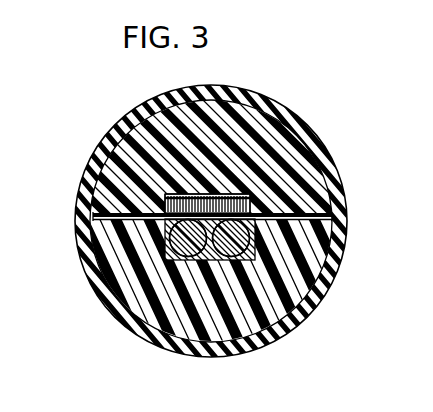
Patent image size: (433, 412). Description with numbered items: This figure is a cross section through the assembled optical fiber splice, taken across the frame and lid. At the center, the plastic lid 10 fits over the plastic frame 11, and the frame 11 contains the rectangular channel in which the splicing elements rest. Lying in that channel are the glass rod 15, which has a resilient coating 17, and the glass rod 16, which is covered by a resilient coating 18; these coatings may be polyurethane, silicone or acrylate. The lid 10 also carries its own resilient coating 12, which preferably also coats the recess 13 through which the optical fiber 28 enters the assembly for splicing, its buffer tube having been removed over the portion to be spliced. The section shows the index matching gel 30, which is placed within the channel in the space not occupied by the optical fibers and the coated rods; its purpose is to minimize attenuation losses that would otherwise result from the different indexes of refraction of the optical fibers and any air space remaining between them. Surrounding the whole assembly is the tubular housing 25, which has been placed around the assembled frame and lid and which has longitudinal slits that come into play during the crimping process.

The plastic lid 10 is at (113, 155).
The plastic frame 11 is at (140, 302).
The resilient coating 12 is at (93, 216).
The recess 13 is at (253, 200).
The glass rod 15 is at (257, 228).
The glass rod 16 is at (168, 253).
The resilient coating 17 is at (254, 257).
The resilient coating 18 is at (138, 321).
The tubular housing 25 is at (308, 124).
The optical fiber 28 is at (220, 196).
The index matching gel 30 is at (177, 345).